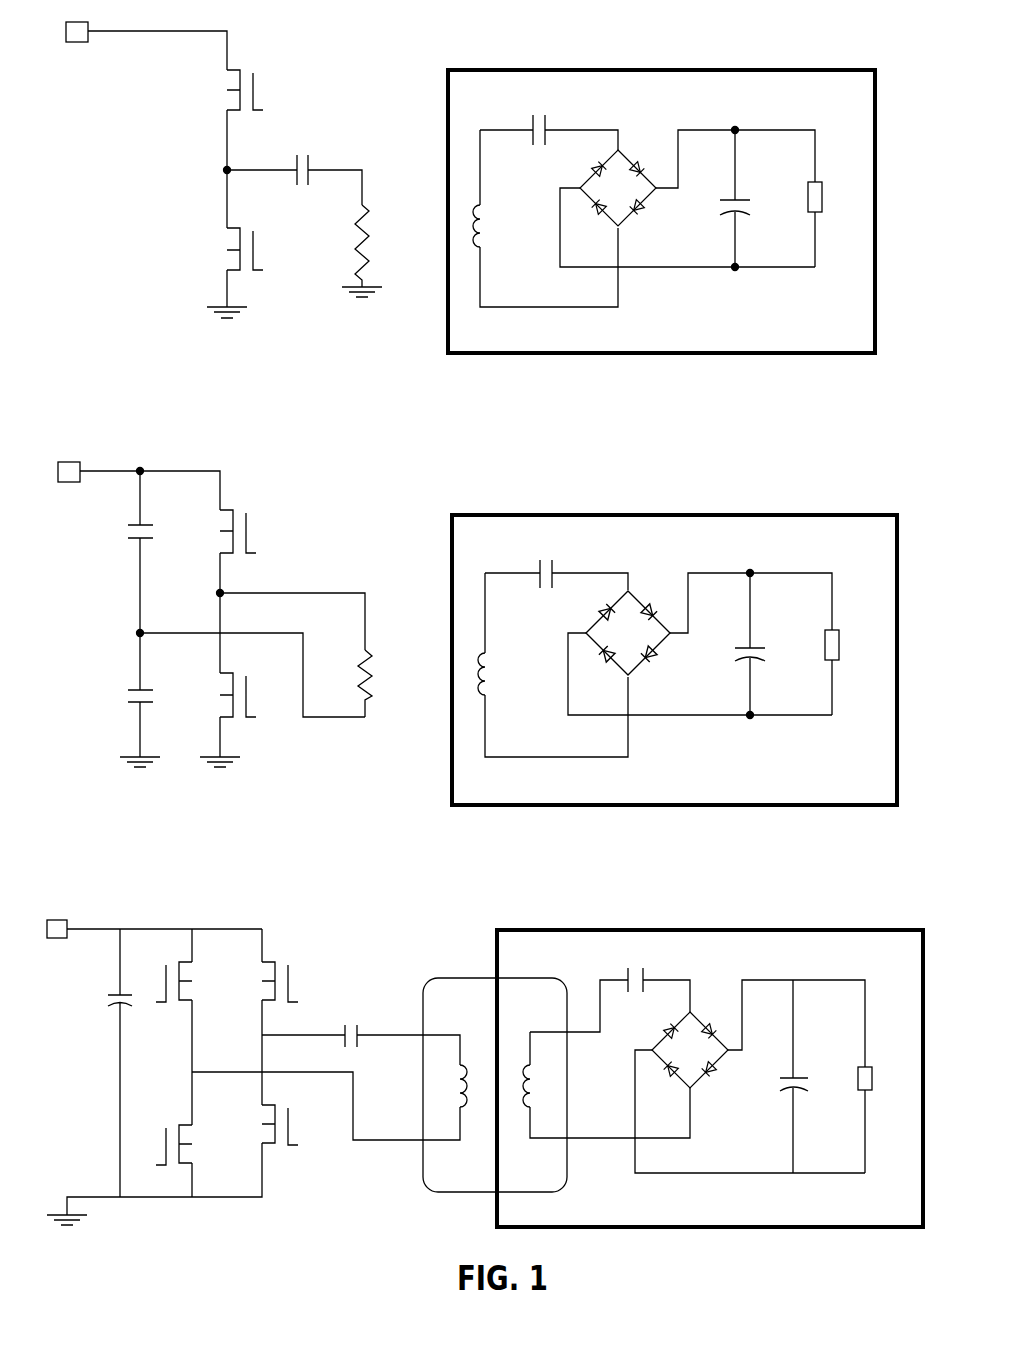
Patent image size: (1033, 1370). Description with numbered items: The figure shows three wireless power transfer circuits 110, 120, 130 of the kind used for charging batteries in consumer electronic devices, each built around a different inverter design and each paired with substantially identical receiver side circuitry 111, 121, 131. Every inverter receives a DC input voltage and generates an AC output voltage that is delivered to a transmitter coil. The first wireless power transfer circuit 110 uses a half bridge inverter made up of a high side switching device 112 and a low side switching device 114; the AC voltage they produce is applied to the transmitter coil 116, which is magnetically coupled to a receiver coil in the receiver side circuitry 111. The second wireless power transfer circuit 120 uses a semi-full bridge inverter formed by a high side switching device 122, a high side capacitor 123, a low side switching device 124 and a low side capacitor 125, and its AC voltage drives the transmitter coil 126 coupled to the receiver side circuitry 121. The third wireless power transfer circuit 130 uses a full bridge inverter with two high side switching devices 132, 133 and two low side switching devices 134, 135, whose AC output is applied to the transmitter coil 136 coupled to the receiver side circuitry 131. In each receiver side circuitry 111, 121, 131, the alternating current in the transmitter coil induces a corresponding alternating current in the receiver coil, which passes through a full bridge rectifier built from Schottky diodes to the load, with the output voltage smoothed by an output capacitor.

The wireless power transfer circuit 110 is at (781, 40).
The receiver side circuitry 111 is at (480, 70).
The high side switching device 112 is at (257, 89).
The low side switching device 114 is at (257, 248).
The transmitter coil 116 is at (370, 210).
The wireless power transfer circuit 120 is at (783, 440).
The receiver side circuitry 121 is at (658, 515).
The high side switching device 122 is at (256, 540).
The high side capacitor 123 is at (125, 523).
The low side switching device 124 is at (257, 685).
The low side capacitor 125 is at (125, 683).
The transmitter coil 126 is at (378, 650).
The wireless power transfer circuit 130 is at (806, 875).
The receiver side circuitry 131 is at (590, 930).
The high side switching device 132 is at (292, 982).
The high side switching device 133 is at (165, 972).
The low side switching device 134 is at (292, 1127).
The low side switching device 135 is at (165, 1133).
The transmitter coil 136 is at (472, 1100).